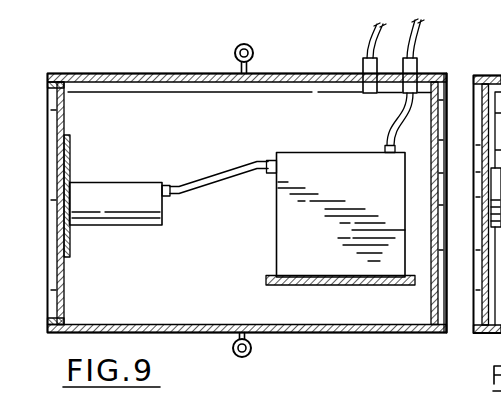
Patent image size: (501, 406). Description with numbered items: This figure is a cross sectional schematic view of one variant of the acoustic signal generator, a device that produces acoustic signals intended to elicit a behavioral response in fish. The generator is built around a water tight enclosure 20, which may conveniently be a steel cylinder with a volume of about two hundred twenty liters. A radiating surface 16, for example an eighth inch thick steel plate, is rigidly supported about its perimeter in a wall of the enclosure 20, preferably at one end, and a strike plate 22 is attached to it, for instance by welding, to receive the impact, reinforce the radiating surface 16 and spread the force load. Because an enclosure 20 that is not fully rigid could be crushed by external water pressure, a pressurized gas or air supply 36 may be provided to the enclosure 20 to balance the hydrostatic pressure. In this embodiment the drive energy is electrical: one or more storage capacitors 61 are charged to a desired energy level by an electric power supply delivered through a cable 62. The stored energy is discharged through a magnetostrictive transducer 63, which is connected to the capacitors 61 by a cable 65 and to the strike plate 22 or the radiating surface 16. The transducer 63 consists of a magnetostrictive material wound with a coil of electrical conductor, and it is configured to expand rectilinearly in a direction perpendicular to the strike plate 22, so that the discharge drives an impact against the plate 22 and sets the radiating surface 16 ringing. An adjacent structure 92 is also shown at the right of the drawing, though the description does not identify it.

The radiating surface 16 is at (51, 71).
The water tight enclosure 20 is at (443, 108).
The strike plate 22 is at (72, 160).
The pressurized gas or air supply 36 is at (361, 67).
The storage capacitor 61 is at (325, 168).
The cable 62 is at (417, 45).
The magnetostrictive transducer 63 is at (135, 206).
The cable 65 is at (206, 173).
The adjacent housing 92 is at (481, 308).